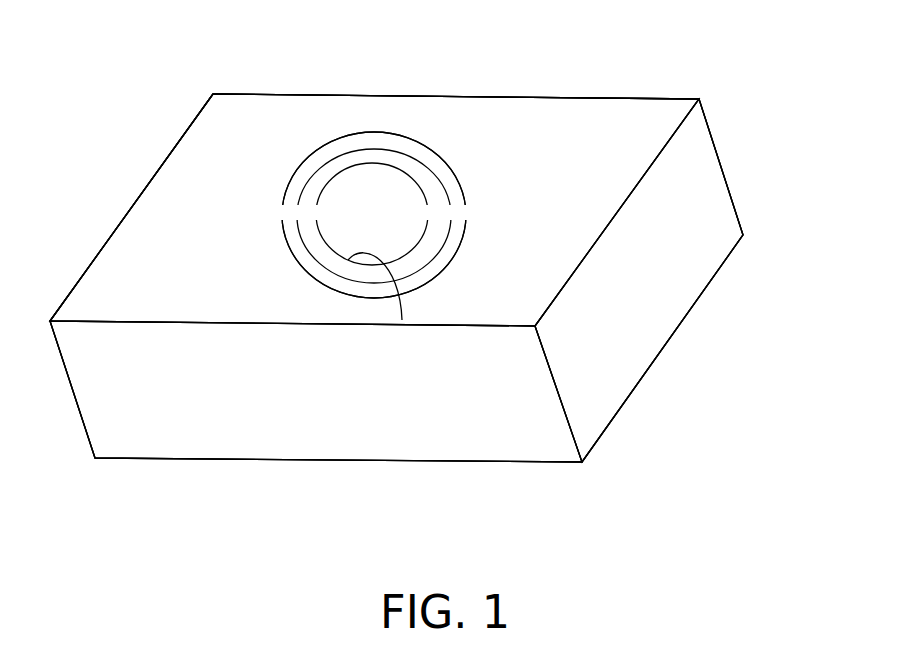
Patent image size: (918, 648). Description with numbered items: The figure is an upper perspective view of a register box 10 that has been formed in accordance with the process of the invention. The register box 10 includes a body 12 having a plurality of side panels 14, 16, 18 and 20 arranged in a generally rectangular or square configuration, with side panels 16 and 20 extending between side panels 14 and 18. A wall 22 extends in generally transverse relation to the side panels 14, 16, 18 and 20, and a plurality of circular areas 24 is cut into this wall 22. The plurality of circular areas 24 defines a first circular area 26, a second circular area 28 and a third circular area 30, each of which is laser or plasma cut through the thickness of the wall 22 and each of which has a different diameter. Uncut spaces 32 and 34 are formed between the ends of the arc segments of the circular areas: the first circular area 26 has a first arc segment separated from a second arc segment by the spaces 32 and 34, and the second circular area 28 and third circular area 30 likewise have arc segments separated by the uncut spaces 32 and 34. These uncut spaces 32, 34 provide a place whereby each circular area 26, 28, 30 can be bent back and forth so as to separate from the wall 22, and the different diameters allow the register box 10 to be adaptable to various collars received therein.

The register box 10 is at (800, 145).
The body 12 is at (623, 375).
The side panel 14 is at (317, 402).
The side panel 16 is at (655, 287).
The side panel 18 is at (643, 98).
The side panel 20 is at (115, 228).
The wall 22 is at (570, 228).
The plurality of circular areas 24 is at (441, 267).
The first circular area 26 is at (402, 320).
The second circular area 28 is at (412, 172).
The third circular area 30 is at (415, 260).
The uncut space 32 is at (466, 210).
The uncut space 34 is at (273, 210).